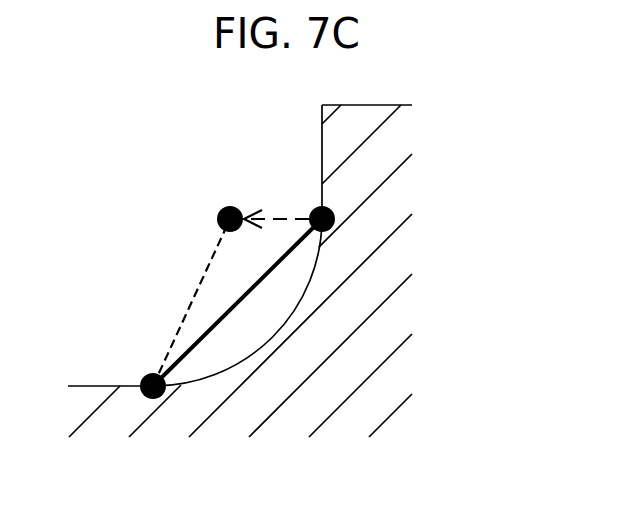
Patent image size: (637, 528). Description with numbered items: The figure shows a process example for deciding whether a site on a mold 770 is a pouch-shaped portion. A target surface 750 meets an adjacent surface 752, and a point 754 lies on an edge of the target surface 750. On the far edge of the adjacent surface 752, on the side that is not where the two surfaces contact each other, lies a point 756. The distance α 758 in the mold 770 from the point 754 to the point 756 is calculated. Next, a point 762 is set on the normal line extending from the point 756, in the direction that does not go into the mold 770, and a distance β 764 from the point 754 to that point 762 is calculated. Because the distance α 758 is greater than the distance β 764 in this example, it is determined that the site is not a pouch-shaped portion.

The target surface 750 is at (110, 386).
The adjacent surface 752 is at (302, 297).
The point on an edge 754 is at (160, 398).
The point on an edge 756 is at (333, 213).
The distance α 758 is at (232, 299).
The point on a normal line 762 is at (221, 209).
The distance β 764 is at (195, 298).
The mold 770 is at (378, 168).